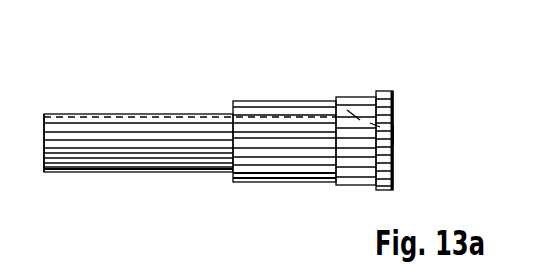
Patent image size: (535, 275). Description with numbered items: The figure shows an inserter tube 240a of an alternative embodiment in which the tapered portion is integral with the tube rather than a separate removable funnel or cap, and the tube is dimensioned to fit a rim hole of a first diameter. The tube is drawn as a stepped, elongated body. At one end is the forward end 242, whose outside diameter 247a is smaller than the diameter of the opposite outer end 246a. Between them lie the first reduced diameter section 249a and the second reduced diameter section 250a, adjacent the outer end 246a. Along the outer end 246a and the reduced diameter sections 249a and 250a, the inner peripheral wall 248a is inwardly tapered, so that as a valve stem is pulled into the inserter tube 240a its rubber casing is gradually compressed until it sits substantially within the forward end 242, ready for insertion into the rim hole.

The inserter tube 240a is at (152, 95).
The forward end 242 is at (82, 120).
The outside diameter 247a is at (44, 115).
The second reduced diameter section 250a is at (297, 102).
The first reduced diameter section 249a is at (363, 103).
The outer end 246a is at (384, 91).
The inner peripheral wall 248a is at (394, 135).